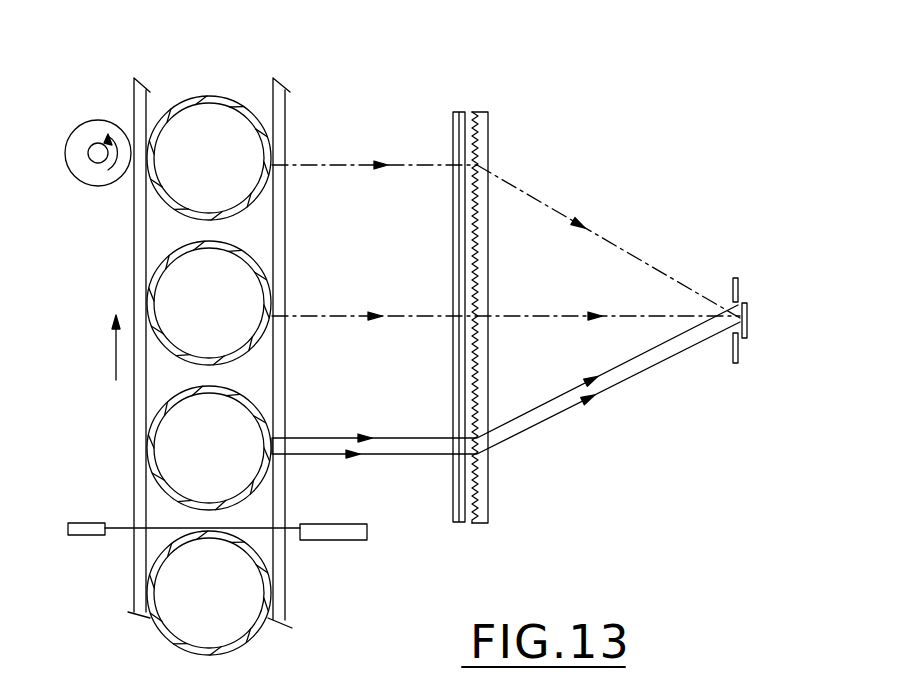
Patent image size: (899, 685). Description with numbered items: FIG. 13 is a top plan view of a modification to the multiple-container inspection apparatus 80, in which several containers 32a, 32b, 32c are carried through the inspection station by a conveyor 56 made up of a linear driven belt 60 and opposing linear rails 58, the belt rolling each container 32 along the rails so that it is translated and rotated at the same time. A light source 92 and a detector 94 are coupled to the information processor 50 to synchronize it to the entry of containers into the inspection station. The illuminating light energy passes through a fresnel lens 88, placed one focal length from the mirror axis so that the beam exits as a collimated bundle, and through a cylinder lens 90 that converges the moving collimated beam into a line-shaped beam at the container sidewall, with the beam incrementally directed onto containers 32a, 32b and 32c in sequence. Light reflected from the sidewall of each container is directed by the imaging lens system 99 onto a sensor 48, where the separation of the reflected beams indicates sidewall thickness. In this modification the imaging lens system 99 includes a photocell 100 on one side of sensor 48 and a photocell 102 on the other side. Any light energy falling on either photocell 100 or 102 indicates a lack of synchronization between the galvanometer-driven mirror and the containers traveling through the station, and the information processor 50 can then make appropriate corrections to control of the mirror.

The container 32 is at (240, 643).
The container 32a is at (262, 427).
The container 32b is at (272, 285).
The container 32c is at (272, 143).
The sensor 48 is at (747, 315).
The information processor 50 is at (93, 125).
The conveyor 56 is at (234, 50).
The linear rails 58 is at (285, 208).
The linear driven belt 60 is at (134, 232).
The apparatus 80 is at (60, 95).
The fresnel lens 88 is at (488, 112).
The cylinder lens 90 is at (453, 112).
The light source 92 is at (78, 520).
The detector 94 is at (345, 522).
The imaging lens system 99 is at (590, 105).
The photocell 100 is at (735, 278).
The photocell 102 is at (738, 363).